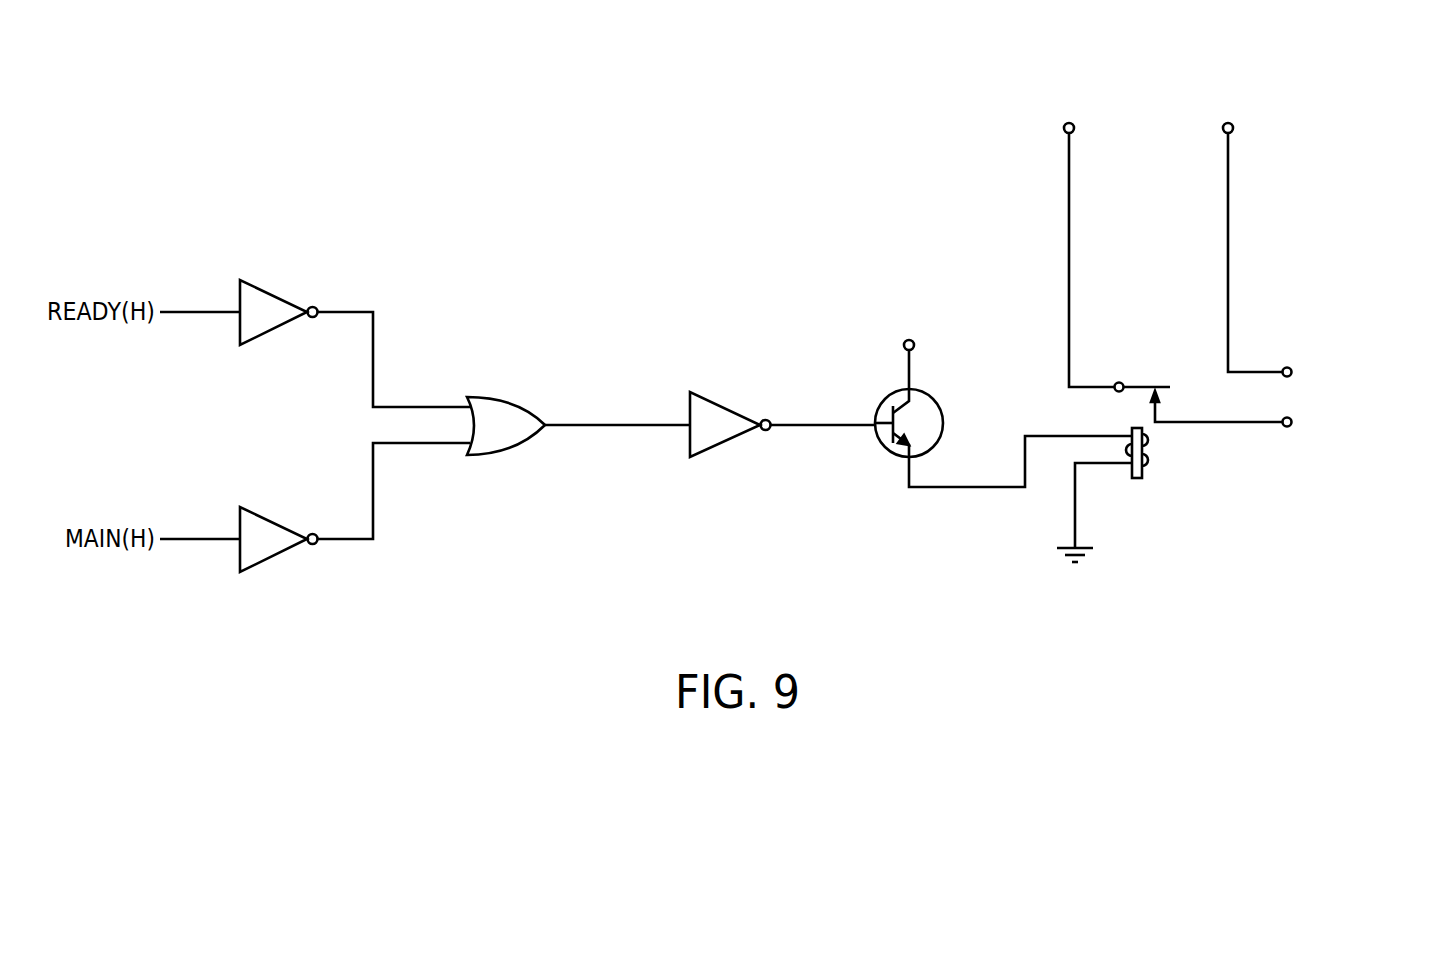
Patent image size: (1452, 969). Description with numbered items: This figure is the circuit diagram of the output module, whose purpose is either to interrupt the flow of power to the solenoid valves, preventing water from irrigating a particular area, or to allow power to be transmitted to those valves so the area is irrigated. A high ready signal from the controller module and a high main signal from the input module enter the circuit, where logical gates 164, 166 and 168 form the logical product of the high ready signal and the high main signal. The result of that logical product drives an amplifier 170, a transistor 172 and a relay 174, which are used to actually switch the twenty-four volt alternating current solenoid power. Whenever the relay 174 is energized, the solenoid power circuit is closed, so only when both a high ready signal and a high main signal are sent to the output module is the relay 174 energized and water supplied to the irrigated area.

The logical gate 164 is at (280, 297).
The logical gate 166 is at (283, 523).
The logical gate 168 is at (524, 400).
The amplifier 170 is at (735, 408).
The transistor 172 is at (931, 402).
The relay 174 is at (1163, 398).